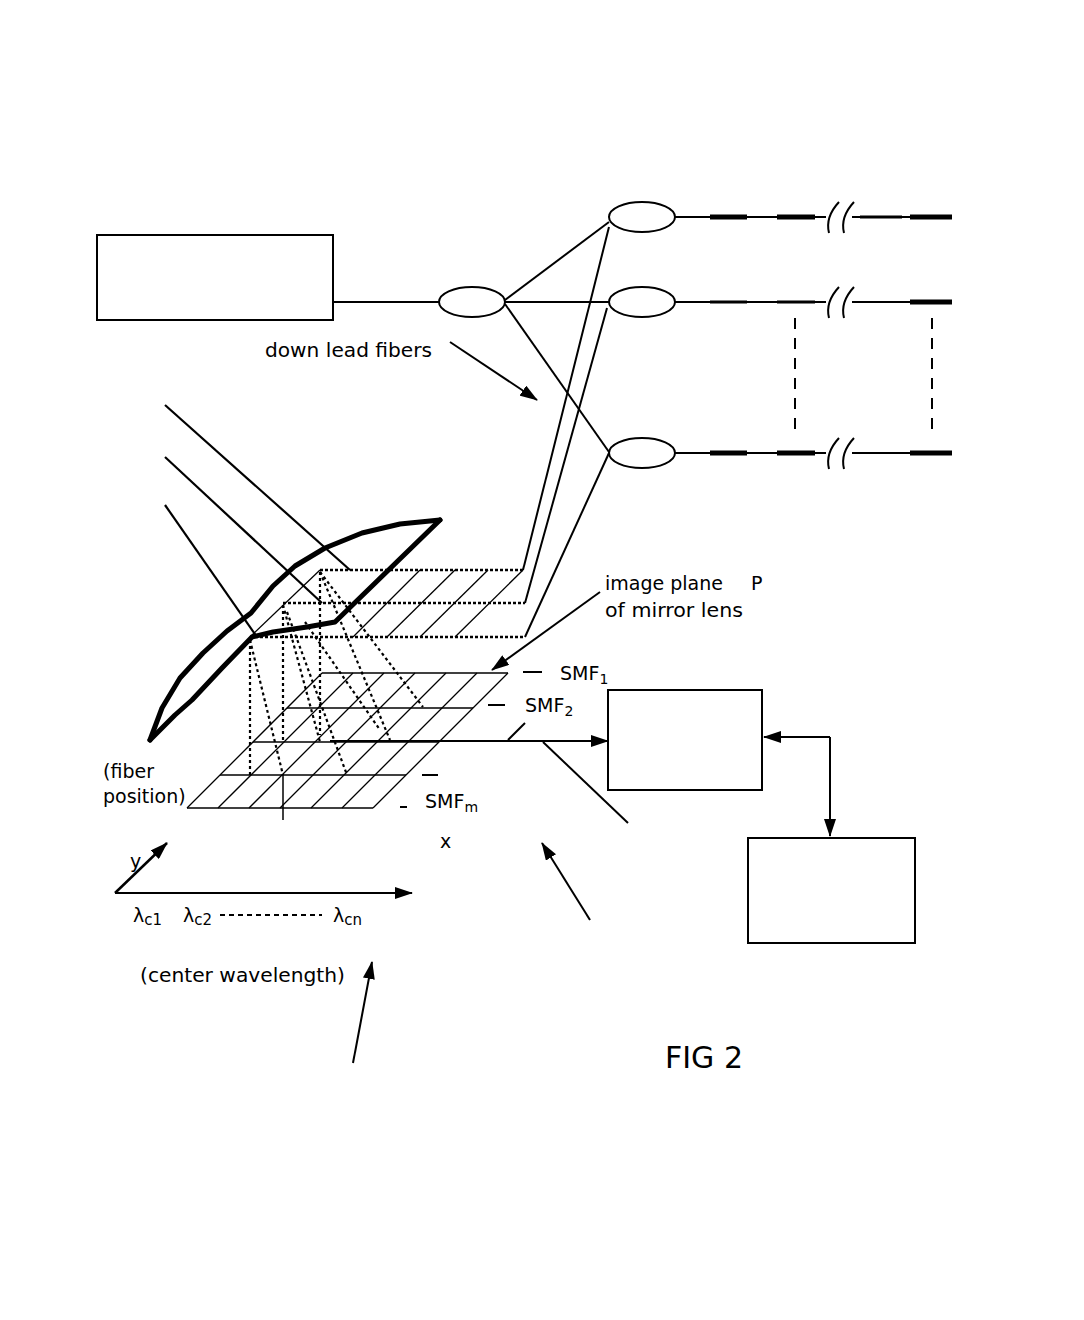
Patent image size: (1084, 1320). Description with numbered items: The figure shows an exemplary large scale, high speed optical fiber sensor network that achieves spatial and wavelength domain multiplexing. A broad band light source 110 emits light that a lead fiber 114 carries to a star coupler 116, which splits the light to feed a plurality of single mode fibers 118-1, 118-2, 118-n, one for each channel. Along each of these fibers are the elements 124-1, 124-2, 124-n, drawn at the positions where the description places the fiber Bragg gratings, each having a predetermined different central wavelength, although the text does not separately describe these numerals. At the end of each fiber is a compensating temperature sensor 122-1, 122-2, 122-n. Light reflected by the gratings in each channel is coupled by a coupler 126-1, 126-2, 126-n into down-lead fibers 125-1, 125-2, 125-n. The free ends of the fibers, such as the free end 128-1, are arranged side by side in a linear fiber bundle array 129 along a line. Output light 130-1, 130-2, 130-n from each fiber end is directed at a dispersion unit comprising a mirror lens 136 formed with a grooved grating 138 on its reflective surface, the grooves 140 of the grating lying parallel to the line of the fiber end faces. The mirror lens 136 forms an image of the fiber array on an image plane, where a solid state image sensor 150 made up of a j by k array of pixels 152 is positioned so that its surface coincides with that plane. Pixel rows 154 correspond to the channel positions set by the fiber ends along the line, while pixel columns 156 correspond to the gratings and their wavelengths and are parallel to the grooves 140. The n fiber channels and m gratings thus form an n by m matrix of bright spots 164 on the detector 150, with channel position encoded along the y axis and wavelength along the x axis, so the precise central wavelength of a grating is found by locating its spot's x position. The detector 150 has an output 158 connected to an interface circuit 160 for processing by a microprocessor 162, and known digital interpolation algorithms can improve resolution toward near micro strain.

The broad band light source 110 is at (215, 277).
The lead fiber 114 is at (402, 302).
The star coupler 116 is at (452, 287).
The single mode fiber 118-1 is at (762, 217).
The single mode fiber 118-2 is at (762, 305).
The single mode fiber 118-n is at (762, 455).
The compensating temperature sensor 122-1 is at (907, 194).
The compensating temperature sensor 122-2 is at (873, 351).
The compensating temperature sensor 122-n is at (917, 477).
The fiber Bragg grating 124-1 is at (727, 217).
The fiber Bragg grating 124-2 is at (795, 217).
The fiber Bragg grating 124-n is at (880, 217).
The down-lead fiber 125-1 is at (556, 433).
The down-lead fiber 125-2 is at (558, 453).
The down-lead fiber 125-n is at (577, 520).
The coupler 126-1 is at (623, 217).
The coupler 126-2 is at (677, 283).
The coupler 126-n is at (672, 430).
The free end of fiber 128-1 is at (452, 565).
The linear fiber bundle array 129 is at (470, 600).
The output light 130-1 is at (225, 480).
The output light 130-2 is at (211, 522).
The output light 130-n is at (178, 564).
The mirror lens 136 is at (203, 657).
The grooved grating 138 is at (183, 693).
The grooves 140 is at (270, 606).
The solid state image sensor 150 is at (370, 793).
The pixels 152 is at (260, 805).
The pixel rows 154 is at (616, 919).
The pixel columns 156 is at (352, 1045).
The output 158 is at (604, 794).
The interface circuit 160 is at (685, 740).
The microprocessor 162 is at (831, 890).
The bright spots 164 is at (400, 743).